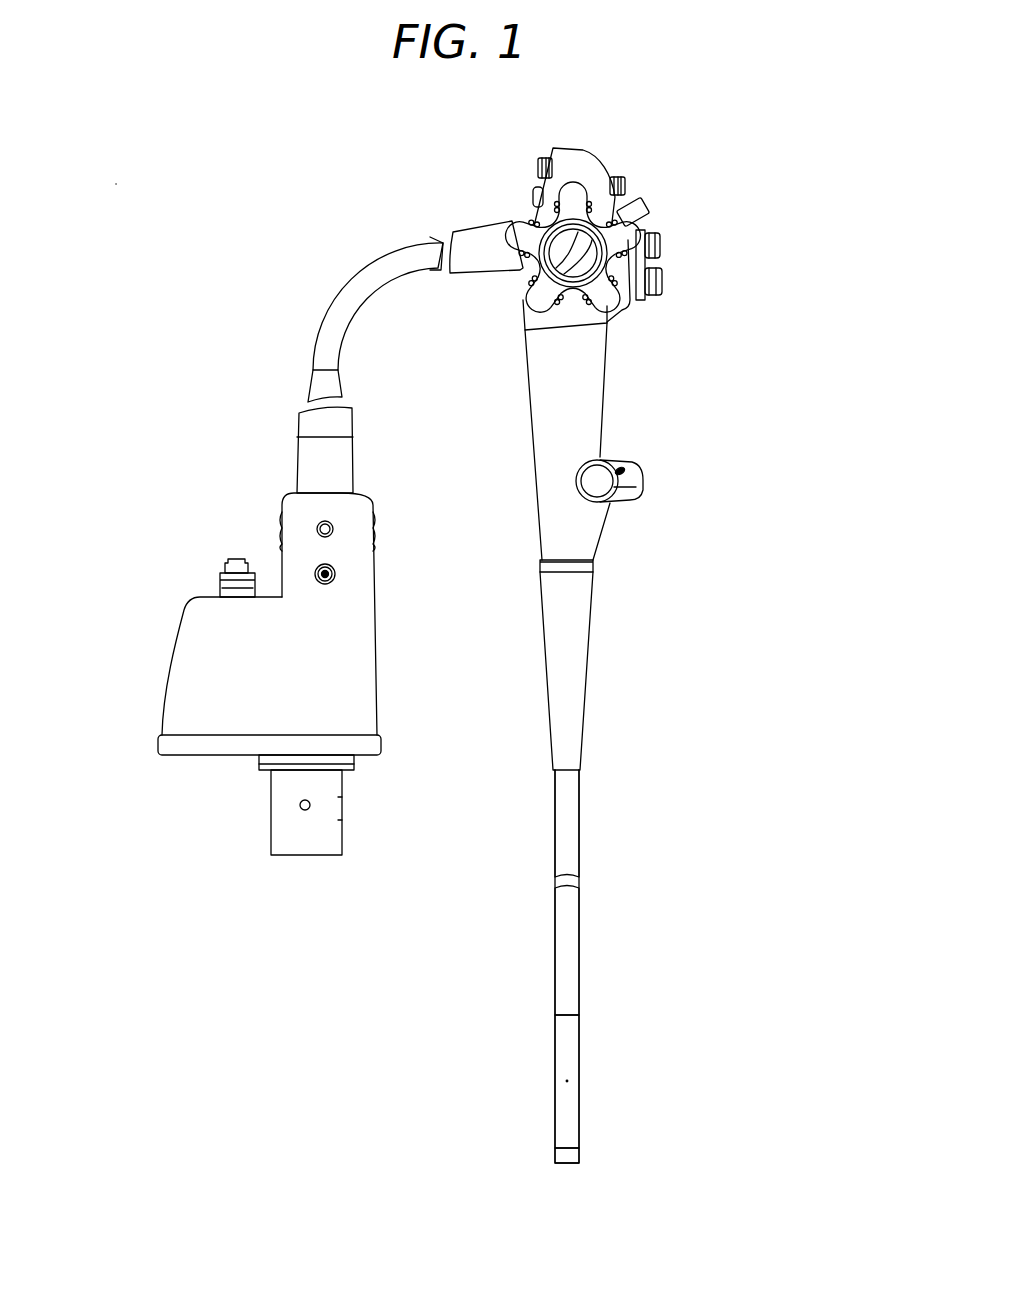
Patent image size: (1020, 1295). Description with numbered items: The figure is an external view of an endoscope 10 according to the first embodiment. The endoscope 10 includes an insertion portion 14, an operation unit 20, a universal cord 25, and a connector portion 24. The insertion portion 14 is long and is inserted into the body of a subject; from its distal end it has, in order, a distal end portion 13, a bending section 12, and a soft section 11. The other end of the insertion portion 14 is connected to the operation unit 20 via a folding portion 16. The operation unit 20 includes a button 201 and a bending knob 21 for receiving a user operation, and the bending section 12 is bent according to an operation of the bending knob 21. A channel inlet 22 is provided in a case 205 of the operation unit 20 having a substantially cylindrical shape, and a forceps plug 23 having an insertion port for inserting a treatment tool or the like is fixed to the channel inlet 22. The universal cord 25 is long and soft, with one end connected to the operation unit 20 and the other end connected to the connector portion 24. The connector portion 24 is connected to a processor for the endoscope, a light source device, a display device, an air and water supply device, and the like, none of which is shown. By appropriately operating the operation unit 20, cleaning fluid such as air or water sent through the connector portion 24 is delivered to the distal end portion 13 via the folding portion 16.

The endoscope 10 is at (144, 184).
The soft section 11 is at (582, 770).
The bending section 12 is at (582, 1015).
The distal end portion 13 is at (567, 1156).
The insertion portion 14 is at (675, 847).
The folding portion 16 is at (575, 653).
The operation unit 20 is at (689, 384).
The bending knob 21 is at (658, 238).
The button 201 is at (665, 280).
The channel inlet 22 is at (597, 520).
The forceps plug 23 is at (617, 490).
The connector portion 24 is at (202, 658).
The universal cord 25 is at (363, 277).
The case 205 is at (593, 397).